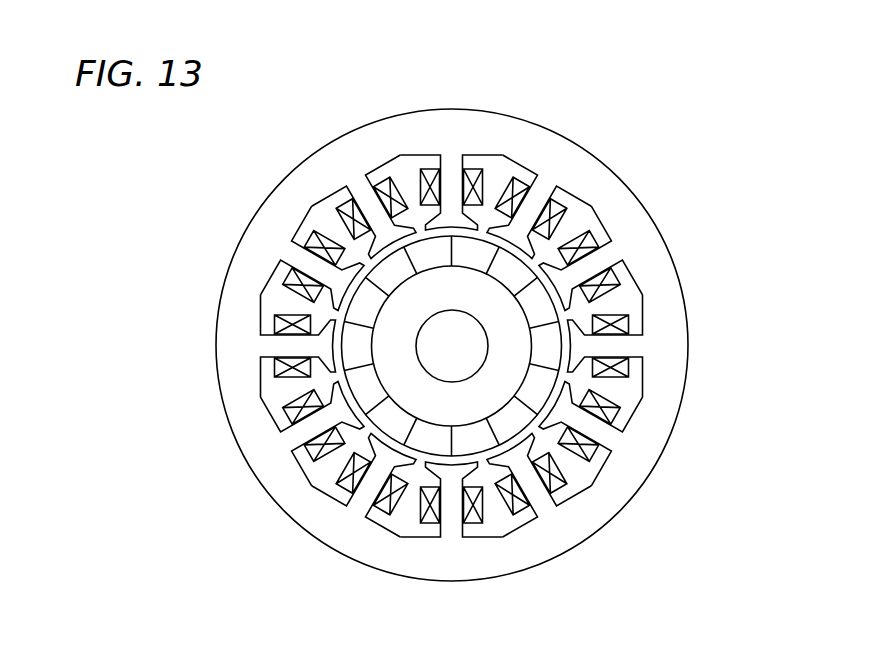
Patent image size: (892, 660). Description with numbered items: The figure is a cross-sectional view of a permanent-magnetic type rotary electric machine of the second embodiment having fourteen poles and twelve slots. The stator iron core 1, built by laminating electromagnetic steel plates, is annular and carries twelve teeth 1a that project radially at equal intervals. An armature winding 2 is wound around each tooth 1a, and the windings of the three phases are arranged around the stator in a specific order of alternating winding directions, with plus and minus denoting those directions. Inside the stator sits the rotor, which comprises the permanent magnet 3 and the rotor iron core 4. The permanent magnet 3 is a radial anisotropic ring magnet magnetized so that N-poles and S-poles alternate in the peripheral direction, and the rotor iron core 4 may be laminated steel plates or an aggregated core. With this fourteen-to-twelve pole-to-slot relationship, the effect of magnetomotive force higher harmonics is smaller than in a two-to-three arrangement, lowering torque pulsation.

The stator iron core 1 is at (660, 298).
The tooth 1a is at (612, 345).
The armature winding 2 is at (497, 344).
The permanent magnet 3 is at (355, 377).
The rotor iron core 4 is at (438, 412).